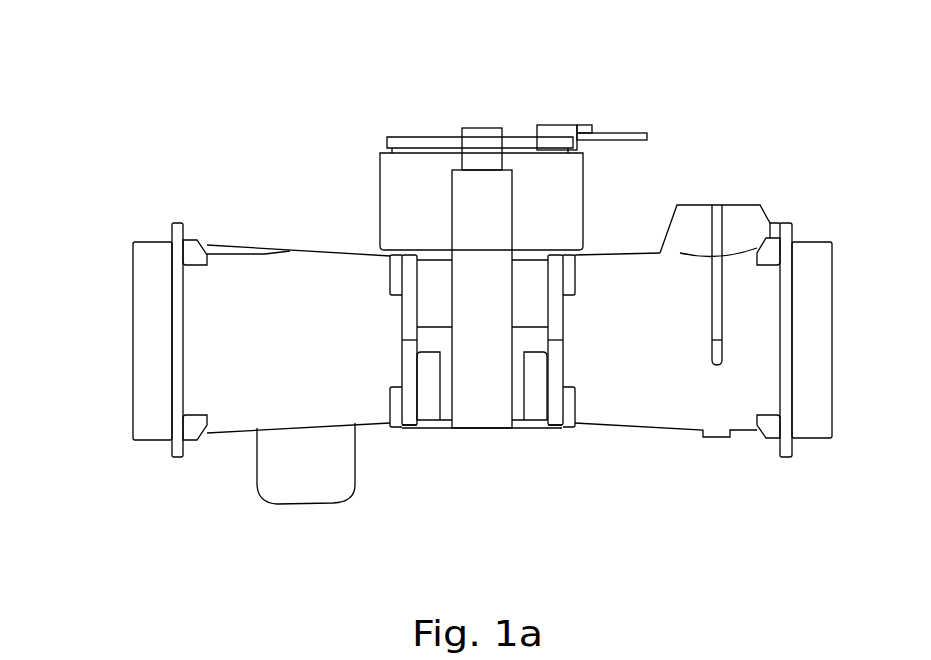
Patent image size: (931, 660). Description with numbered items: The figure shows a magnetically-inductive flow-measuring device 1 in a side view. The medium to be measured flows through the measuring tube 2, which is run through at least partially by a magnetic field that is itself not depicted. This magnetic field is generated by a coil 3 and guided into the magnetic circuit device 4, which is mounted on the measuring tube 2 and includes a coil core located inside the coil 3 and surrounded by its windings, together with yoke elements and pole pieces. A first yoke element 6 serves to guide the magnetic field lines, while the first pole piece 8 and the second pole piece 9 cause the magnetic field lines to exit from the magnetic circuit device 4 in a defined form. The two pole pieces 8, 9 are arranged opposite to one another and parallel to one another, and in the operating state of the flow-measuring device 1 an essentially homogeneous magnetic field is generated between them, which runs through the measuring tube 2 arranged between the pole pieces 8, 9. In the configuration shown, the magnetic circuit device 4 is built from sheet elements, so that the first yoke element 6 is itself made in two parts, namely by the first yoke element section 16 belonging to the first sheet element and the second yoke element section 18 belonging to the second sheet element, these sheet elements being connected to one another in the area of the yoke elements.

The magnetically-inductive flow-measuring device 1 is at (95, 67).
The measuring tube 2 is at (670, 403).
The coil 3 is at (568, 195).
The magnetic circuit device 4 is at (470, 113).
The first yoke element 6 is at (473, 232).
The first pole piece 8 is at (538, 256).
The second pole piece 9 is at (530, 423).
The first yoke element section 16 is at (493, 138).
The second yoke element section 18 is at (467, 420).